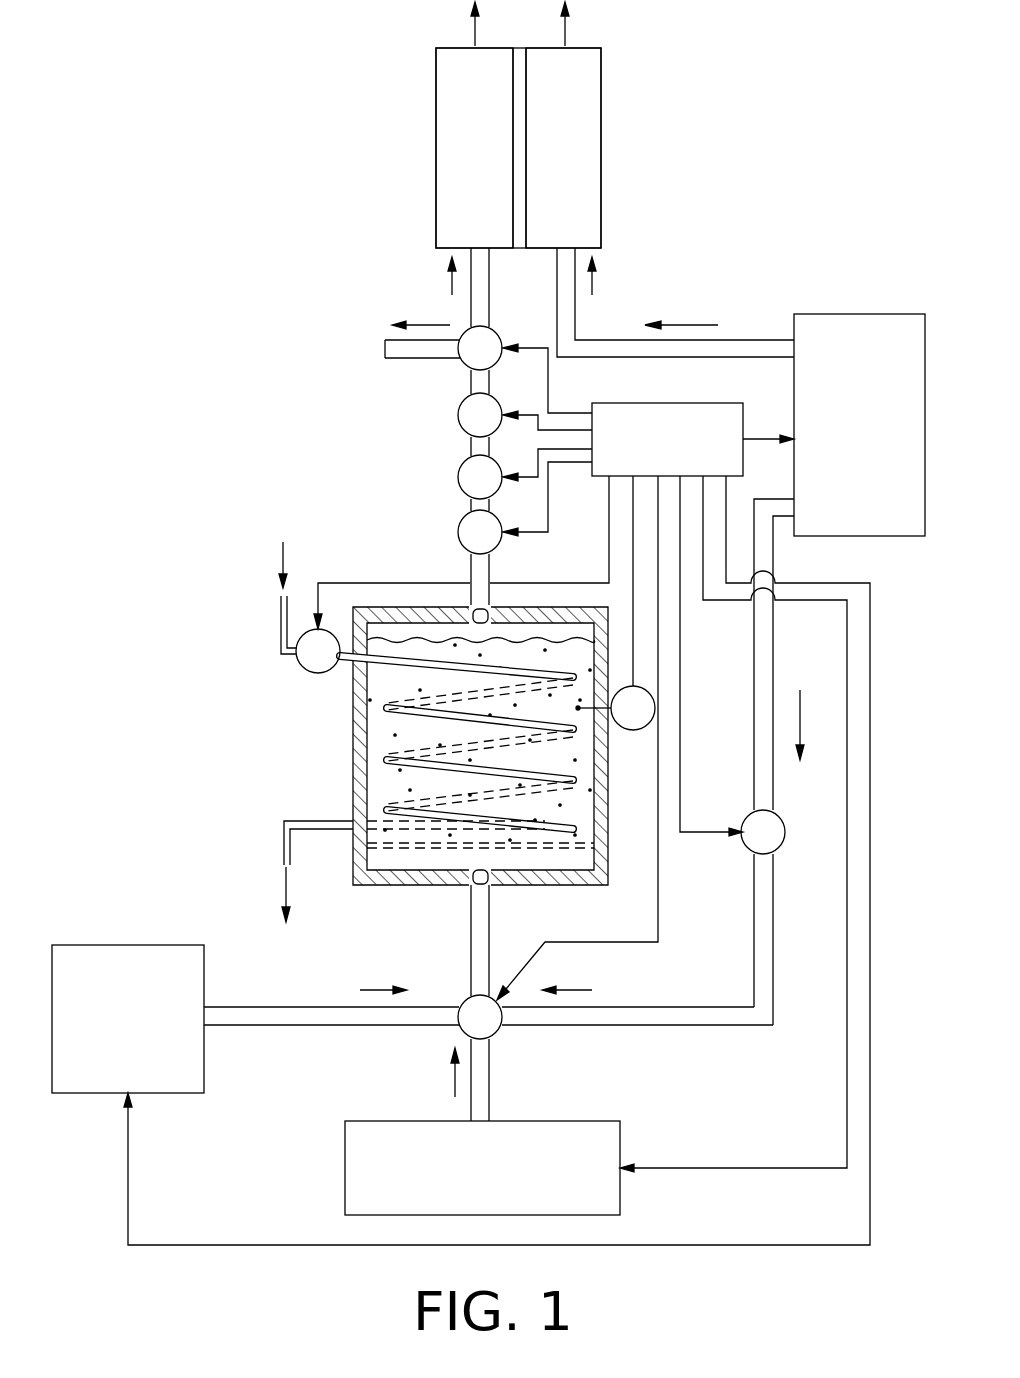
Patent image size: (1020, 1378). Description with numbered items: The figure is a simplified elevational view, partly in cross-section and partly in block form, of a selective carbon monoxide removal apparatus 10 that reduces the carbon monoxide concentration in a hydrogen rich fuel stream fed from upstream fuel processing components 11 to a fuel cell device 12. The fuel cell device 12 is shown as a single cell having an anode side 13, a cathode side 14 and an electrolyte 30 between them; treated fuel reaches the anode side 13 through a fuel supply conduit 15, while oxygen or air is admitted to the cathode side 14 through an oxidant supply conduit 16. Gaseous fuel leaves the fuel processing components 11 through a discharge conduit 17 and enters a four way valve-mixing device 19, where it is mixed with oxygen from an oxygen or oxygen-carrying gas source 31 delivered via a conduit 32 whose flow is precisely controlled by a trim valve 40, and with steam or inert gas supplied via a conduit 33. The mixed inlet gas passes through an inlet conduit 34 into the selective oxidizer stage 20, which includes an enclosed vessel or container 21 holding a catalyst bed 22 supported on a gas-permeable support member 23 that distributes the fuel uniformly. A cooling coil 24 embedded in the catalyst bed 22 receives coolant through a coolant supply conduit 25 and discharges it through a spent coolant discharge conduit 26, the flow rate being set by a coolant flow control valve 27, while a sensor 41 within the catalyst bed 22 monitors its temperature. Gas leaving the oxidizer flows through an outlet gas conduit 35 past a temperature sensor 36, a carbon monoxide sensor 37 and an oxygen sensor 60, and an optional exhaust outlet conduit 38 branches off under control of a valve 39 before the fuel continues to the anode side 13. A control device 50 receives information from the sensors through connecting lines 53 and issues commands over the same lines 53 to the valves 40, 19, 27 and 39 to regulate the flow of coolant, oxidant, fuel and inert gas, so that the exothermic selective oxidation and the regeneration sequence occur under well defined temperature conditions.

The selective carbon monoxide removal apparatus 10 is at (345, 418).
The upstream fuel processing components 11 is at (390, 1121).
The fuel cell device 12 is at (624, 88).
The anode side 13 is at (443, 85).
The cathode side 14 is at (595, 133).
The fuel supply conduit 15 is at (487, 263).
The oxidant supply conduit 16 is at (732, 340).
The discharge conduit 17 is at (487, 1080).
The four way valve-mixing device 19 is at (468, 998).
The selective oxidizer stage 20 is at (316, 757).
The enclosed vessel or container 21 is at (365, 848).
The catalyst bed 22 is at (403, 732).
The gas-permeable support member 23 is at (457, 848).
The cooling coil 24 is at (402, 762).
The coolant supply conduit 25 is at (280, 627).
The spent coolant discharge conduit 26 is at (284, 820).
The coolant flow control valve 27 is at (307, 670).
The electrolyte 30 is at (519, 85).
The oxygen or oxygen-carrying gas source 31 is at (818, 314).
The oxidant conduit 32 is at (760, 627).
The steam or inert gas conduit 33 is at (310, 1025).
The inlet conduit 34 is at (485, 903).
The outlet gas conduit 35 is at (470, 578).
The temperature sensor 36 is at (458, 520).
The carbon monoxide sensor 37 is at (460, 463).
The exhaust outlet conduit 38 is at (392, 340).
The exhaust valve 39 is at (465, 367).
The trim valve 40 is at (752, 845).
The bed temperature sensor 41 is at (628, 731).
The control device 50 is at (650, 403).
The connecting and control lines 53 is at (545, 415).
The oxygen sensor 60 is at (460, 405).